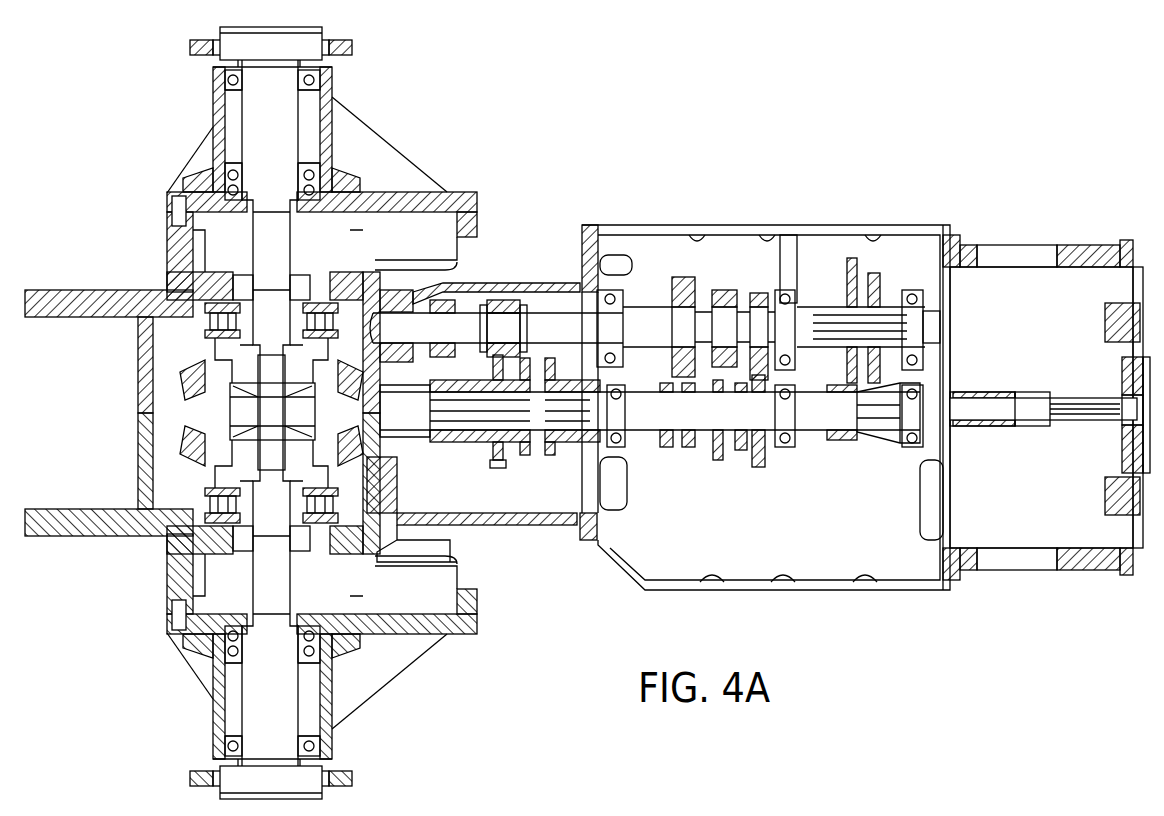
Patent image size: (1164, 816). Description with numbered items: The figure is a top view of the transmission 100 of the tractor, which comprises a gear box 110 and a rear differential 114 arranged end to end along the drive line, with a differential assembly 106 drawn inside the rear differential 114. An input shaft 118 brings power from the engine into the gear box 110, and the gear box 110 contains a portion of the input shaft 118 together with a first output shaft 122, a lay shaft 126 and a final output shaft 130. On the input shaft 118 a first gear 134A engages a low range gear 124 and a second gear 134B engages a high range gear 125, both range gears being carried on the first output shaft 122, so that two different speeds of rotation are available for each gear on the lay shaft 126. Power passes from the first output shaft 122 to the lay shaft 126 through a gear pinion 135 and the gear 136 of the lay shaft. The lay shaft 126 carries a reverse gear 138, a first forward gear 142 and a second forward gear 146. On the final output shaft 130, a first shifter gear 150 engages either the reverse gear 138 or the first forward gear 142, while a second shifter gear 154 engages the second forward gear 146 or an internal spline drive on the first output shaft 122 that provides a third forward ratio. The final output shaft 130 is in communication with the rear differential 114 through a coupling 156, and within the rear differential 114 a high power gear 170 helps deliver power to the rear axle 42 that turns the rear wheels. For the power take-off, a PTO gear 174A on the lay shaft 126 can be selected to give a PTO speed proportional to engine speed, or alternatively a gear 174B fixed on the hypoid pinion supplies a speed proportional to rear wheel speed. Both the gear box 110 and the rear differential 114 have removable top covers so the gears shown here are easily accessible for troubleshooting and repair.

The rear axle 42 is at (283, 238).
The transmission 100 is at (830, 145).
The differential 106 is at (214, 442).
The gear box 110 is at (745, 592).
The rear differential 114 is at (467, 523).
The input shaft 118 is at (1018, 407).
The first output shaft 122 is at (827, 307).
The low range gear 124 is at (840, 258).
The high range gear 125 is at (874, 273).
The lay shaft 126 is at (740, 447).
The final output shaft 130 is at (658, 303).
The first gear 134A is at (837, 423).
The second gear 134B is at (888, 430).
The gear pinion 135 is at (760, 293).
The gear 136 is at (760, 447).
The reverse gear 138 is at (680, 447).
The first forward gear 142 is at (710, 447).
The second forward gear 146 is at (735, 447).
The first shifter gear 150 is at (680, 290).
The second shifter gear 154 is at (722, 290).
The coupling 156 is at (495, 298).
The high power gear 170 is at (490, 462).
The PTO gear 174A is at (552, 455).
The gear 174B is at (525, 455).